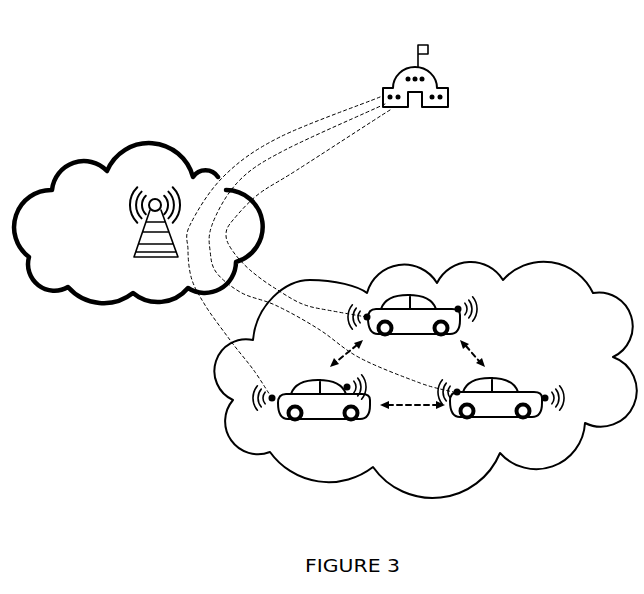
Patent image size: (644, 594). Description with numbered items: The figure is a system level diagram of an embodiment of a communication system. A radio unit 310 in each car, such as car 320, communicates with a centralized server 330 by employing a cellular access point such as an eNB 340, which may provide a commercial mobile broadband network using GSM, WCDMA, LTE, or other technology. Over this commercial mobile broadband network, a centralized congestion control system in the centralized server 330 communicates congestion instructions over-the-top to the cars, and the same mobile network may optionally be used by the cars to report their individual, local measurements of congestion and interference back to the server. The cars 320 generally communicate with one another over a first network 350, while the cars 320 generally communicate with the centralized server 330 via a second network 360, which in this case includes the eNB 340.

The radio unit 310 is at (561, 391).
The car 320 is at (537, 386).
The centralized server 330 is at (450, 79).
The eNB 340 is at (150, 186).
The first network 350 is at (453, 476).
The second network 360 is at (88, 273).